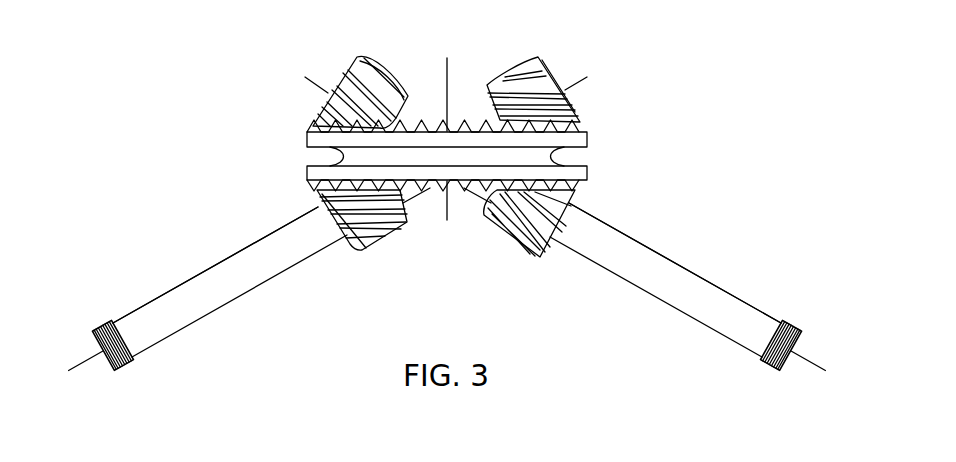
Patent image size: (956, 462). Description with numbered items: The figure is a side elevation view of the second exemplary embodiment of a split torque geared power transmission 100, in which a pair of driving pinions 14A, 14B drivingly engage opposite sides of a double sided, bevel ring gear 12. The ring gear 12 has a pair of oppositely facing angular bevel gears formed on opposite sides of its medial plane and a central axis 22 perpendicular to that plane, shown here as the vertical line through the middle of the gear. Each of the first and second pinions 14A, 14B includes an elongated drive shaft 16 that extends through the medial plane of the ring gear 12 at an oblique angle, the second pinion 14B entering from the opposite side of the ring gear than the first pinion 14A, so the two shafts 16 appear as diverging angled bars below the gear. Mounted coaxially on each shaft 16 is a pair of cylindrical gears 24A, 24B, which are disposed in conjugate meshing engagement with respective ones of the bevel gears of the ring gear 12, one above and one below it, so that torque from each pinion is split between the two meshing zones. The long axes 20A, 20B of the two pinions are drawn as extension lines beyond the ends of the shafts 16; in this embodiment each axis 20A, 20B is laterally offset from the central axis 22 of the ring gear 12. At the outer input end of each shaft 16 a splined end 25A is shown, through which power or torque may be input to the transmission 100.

The split torque geared power transmission 100 is at (724, 125).
The ring gear 12 is at (589, 138).
The central axis 22 is at (450, 68).
The cylindrical gear 24A is at (359, 57).
The cylindrical gear 24B is at (380, 240).
The first pinion 14A is at (666, 303).
The second pinion 14B is at (238, 297).
The drive shaft 16 is at (202, 273).
The knurled shaft end 25A is at (109, 321).
The axis 20A is at (311, 81).
The axis 20B is at (582, 80).